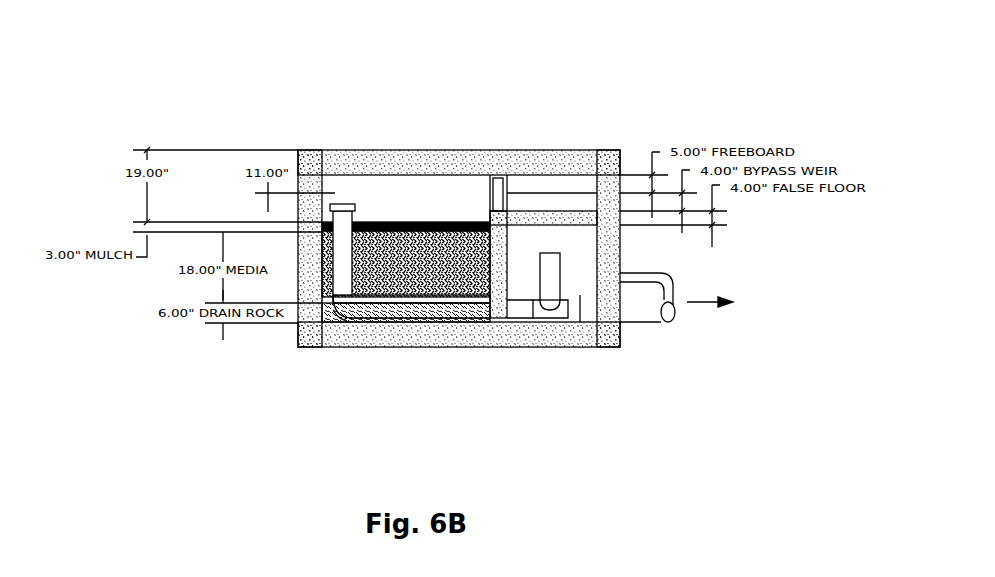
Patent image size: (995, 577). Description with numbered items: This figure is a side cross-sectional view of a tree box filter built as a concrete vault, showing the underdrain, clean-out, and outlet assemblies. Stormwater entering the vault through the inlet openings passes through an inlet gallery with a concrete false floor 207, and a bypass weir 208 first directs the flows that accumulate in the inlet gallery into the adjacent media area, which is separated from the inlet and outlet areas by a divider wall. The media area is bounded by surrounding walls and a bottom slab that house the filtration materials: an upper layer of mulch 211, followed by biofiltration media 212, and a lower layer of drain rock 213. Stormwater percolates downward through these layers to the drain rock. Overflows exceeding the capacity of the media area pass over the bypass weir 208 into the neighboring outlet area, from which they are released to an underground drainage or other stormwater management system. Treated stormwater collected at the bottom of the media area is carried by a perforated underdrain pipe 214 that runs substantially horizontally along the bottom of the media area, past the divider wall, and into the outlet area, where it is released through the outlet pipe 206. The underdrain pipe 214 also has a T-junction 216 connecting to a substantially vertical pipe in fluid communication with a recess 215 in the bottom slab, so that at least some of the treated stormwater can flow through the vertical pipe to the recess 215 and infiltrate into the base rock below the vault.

The outlet pipe 206 is at (650, 330).
The inlet gallery with a concrete false floor 207 is at (532, 211).
The bypass weir 208 is at (550, 193).
The mulch 211 is at (434, 222).
The biofiltration media 212 is at (423, 222).
The drain rock 213 is at (395, 322).
The perforated underdrain pipe 214 is at (370, 322).
The recess in the bottom slab 215 is at (460, 340).
The T-junction 216 is at (545, 322).